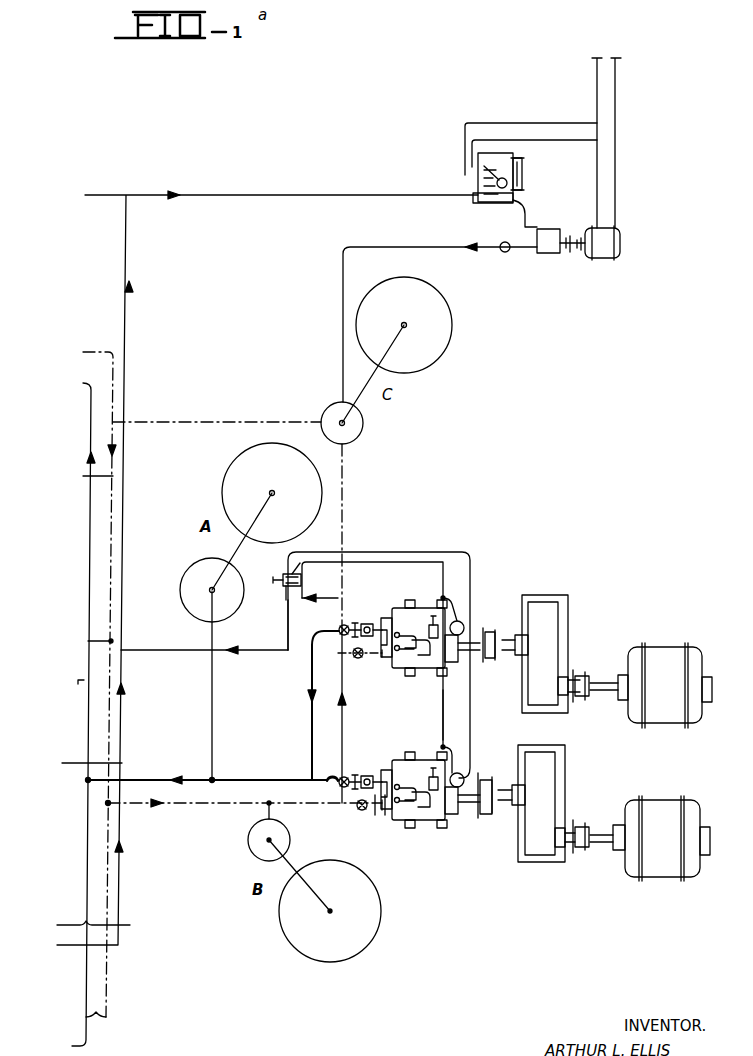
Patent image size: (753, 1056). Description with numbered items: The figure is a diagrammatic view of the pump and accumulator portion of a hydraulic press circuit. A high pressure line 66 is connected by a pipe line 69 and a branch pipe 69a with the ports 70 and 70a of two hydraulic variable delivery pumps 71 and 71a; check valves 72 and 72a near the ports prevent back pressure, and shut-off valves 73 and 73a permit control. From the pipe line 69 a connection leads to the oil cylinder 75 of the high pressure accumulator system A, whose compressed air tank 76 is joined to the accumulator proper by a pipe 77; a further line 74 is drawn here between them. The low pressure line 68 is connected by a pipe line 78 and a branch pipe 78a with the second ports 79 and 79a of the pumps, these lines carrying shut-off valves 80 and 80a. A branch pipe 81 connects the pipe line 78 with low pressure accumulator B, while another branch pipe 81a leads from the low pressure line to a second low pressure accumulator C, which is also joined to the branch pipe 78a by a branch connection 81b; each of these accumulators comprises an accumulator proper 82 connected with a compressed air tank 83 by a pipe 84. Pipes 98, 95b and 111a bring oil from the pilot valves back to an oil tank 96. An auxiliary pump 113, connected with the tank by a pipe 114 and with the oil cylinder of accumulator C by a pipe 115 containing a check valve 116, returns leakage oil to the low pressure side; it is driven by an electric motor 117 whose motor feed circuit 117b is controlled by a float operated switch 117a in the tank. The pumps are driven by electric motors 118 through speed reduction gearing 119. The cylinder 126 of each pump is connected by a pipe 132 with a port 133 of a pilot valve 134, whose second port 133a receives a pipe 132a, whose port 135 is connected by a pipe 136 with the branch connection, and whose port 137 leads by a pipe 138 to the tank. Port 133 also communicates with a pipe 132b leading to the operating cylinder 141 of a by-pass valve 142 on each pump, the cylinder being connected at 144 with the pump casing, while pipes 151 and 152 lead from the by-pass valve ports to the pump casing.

The pipe 98 is at (268, 194).
The motor feed circuit 117b is at (608, 131).
The oil tank 96 is at (486, 168).
The float operated switch 117a is at (478, 191).
The pipe 114 is at (529, 221).
The check valve 116 is at (502, 242).
The pipe 115 is at (452, 250).
The auxiliary pump 113 is at (548, 256).
The electric motor 117 is at (602, 260).
The compressed air tank 83 is at (448, 335).
The pipe 84 is at (359, 401).
The accumulator proper 82 is at (365, 427).
The branch pipe 81a is at (232, 422).
The branch connection 81b is at (343, 498).
The branch pipe 81 is at (248, 838).
The low pressure line 68 is at (113, 393).
The high pressure line 66 is at (91, 519).
The pipe 95b is at (132, 924).
The branch pipe 111a is at (75, 766).
The compressed air tank 76 is at (272, 493).
The pipe 77 is at (240, 552).
The oil cylinder 75 is at (197, 604).
The line 74 is at (210, 700).
The pipe 138 is at (204, 659).
The pipe line 69 is at (158, 778).
The pipe line 78 is at (193, 808).
The port 133 is at (304, 564).
The second port 133a is at (282, 578).
The pilot valve 134 is at (303, 582).
The port 137 is at (284, 593).
The port 135 is at (287, 612).
The pipe 136 is at (320, 609).
The pipe 132 is at (392, 562).
The pipe 132a is at (378, 551).
The pipe 132b is at (442, 726).
The check valve 72a is at (366, 623).
The port 70a is at (393, 618).
The connection 144 is at (412, 606).
The operating cylinder 141 is at (434, 616).
The cylinder 126 is at (464, 624).
The by-pass valve 142 is at (450, 664).
The pipe 152 is at (407, 676).
The pipe 151 is at (426, 652).
The hydraulic variable delivery pump 71a is at (425, 670).
The speed reduction gearing 119 is at (553, 728).
The electric motor 118 is at (668, 762).
The shut-off valve 73a is at (336, 638).
The shut-off valve 80a is at (357, 660).
The branch pipe 69a is at (310, 708).
The second port 79a is at (380, 666).
The branch pipe 78a is at (344, 724).
The check valve 72 is at (366, 775).
The port 70 is at (393, 770).
The hydraulic variable delivery pump 71 is at (440, 812).
The shut-off valve 73 is at (338, 802).
The shut-off valve 80 is at (363, 812).
The second port 79 is at (385, 812).